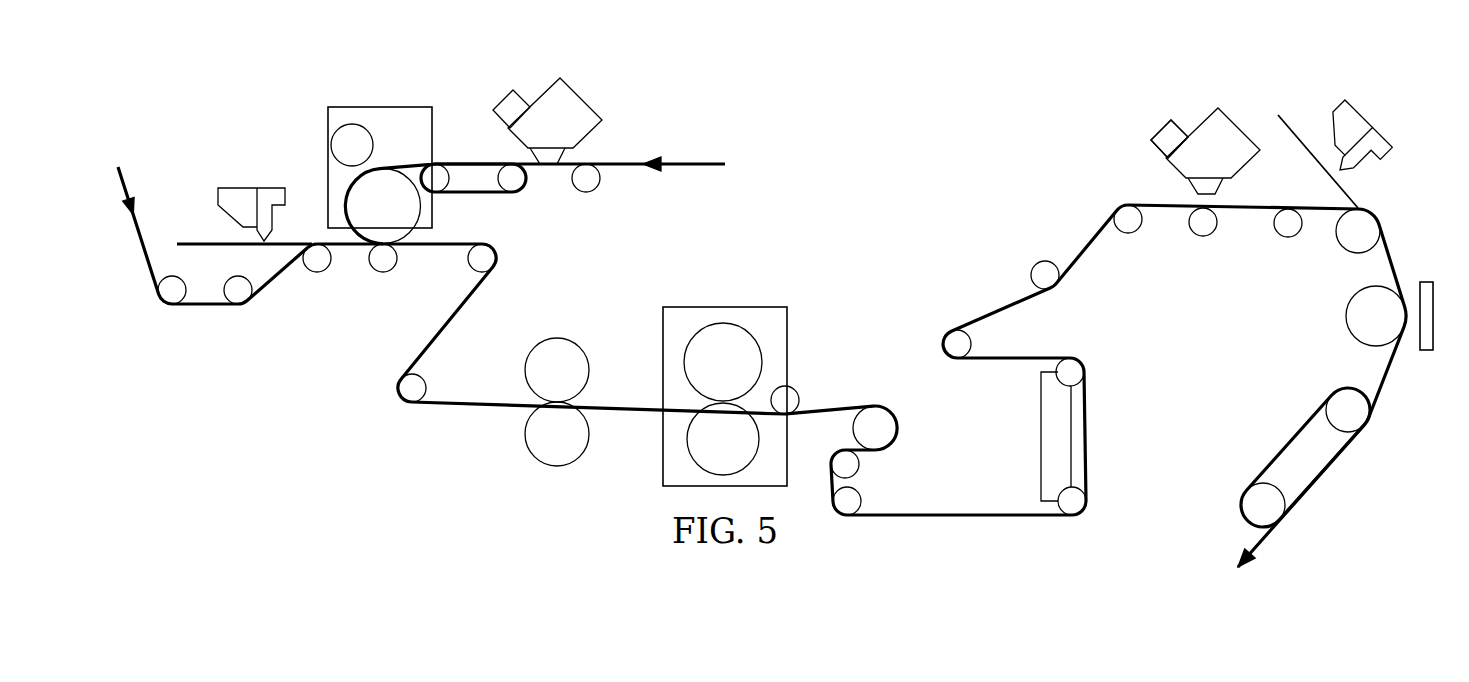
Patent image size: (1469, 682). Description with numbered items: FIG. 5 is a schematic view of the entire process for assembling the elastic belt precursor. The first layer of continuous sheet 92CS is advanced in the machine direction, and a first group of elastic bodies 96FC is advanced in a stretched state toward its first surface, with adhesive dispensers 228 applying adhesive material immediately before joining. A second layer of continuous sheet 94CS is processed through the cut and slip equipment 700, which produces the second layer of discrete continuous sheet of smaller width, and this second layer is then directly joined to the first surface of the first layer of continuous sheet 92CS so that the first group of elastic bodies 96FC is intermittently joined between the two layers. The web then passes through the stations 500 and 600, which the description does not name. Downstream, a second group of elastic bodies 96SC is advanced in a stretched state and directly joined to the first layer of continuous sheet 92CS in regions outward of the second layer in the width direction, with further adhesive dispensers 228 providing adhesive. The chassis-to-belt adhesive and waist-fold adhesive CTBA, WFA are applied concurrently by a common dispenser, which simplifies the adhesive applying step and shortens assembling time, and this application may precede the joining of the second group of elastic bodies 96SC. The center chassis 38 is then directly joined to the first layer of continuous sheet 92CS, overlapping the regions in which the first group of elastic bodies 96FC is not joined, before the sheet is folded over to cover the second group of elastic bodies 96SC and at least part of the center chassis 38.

The cut and slip equipment 700 is at (356, 88).
The adhesive dispensers 228 is at (240, 197).
The first group of elastic bodies 96FC is at (207, 240).
The first layer of continuous sheet 92CS is at (202, 307).
The second layer of continuous sheet 94CS is at (717, 137).
The nip rolls 500 is at (555, 342).
The embossing/bonding unit 600 is at (722, 325).
The construction adhesive applicator CTBA, WFA is at (1152, 123).
The second group of elastic bodies 96SC is at (1287, 122).
The center chassis 38 is at (1427, 280).